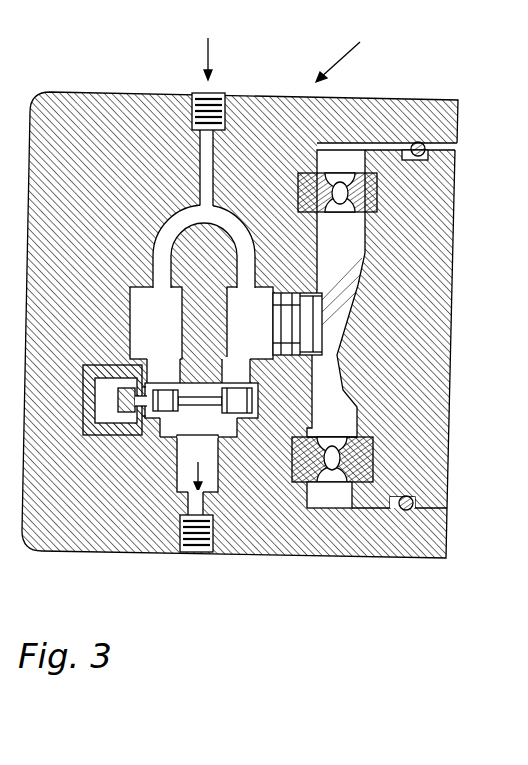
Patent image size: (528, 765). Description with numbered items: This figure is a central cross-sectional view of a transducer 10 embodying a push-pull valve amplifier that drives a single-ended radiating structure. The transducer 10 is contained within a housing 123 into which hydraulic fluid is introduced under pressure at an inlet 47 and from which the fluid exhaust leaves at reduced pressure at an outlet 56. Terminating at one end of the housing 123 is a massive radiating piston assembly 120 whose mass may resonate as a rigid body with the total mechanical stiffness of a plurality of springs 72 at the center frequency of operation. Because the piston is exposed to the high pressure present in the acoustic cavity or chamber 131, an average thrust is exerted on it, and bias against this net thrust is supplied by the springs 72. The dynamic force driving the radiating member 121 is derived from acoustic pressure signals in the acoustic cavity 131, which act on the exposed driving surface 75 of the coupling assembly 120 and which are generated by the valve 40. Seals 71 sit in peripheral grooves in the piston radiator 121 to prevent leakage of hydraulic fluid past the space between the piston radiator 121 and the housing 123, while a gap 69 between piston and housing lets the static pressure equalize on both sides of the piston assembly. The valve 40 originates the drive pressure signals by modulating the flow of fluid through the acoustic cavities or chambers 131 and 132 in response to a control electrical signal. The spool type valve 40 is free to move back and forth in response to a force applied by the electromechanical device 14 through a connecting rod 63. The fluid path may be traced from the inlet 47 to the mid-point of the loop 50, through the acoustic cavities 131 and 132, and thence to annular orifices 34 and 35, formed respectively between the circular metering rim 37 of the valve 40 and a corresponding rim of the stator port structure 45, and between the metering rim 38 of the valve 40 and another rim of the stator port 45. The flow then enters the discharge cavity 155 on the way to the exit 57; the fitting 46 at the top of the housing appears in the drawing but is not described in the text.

The transducer 10 is at (349, 51).
The electromechanical device 14 is at (102, 436).
The annular orifice 34 is at (236, 364).
The annular orifice 35 is at (163, 362).
The circular metering rim 37 is at (202, 397).
The metering rim 38 is at (198, 423).
The spool type valve 40 is at (201, 388).
The stator port structure 45 is at (232, 426).
The inlet fitting 46 is at (198, 92).
The inlet 47 is at (202, 145).
The loop 50 is at (226, 208).
The outlet 56 is at (186, 505).
The exit 57 is at (190, 554).
The connecting rod 63 is at (144, 424).
The gap 69 is at (329, 495).
The seals 71 is at (403, 511).
The springs 72 is at (339, 180).
The exposed driving surface 75 is at (274, 332).
The radiating piston assembly 120 is at (322, 292).
The radiating member 121 is at (445, 179).
The housing 123 is at (264, 97).
The acoustic cavity 131 is at (239, 310).
The acoustic cavity 132 is at (143, 308).
The discharge cavity 155 is at (185, 460).